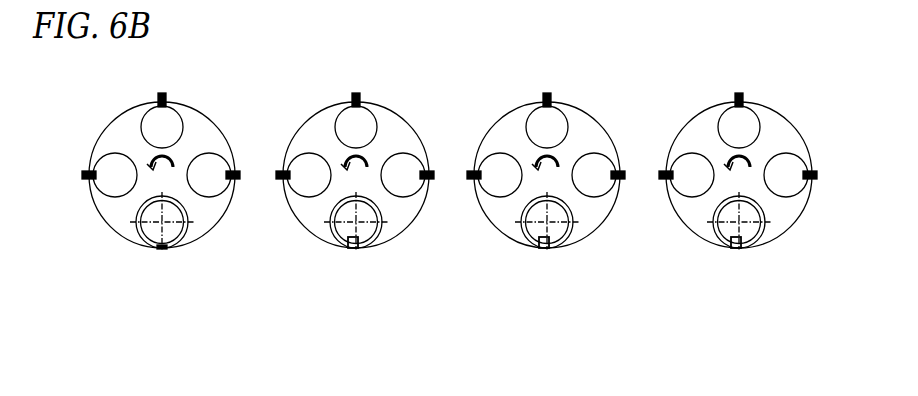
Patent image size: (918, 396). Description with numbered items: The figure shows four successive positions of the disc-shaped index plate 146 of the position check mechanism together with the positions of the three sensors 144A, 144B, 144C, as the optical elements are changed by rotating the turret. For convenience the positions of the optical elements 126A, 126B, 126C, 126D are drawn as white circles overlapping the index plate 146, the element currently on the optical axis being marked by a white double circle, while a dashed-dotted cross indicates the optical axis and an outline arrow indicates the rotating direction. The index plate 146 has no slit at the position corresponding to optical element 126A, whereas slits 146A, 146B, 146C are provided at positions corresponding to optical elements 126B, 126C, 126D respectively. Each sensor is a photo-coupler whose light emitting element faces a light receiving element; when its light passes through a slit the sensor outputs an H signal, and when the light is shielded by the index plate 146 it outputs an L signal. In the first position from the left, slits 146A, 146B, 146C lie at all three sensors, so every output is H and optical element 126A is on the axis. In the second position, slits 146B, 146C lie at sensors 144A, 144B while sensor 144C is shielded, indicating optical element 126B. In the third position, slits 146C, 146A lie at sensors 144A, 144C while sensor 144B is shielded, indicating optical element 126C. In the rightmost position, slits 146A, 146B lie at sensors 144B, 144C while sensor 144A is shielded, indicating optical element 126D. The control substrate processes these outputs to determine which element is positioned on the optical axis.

The optical element 126A is at (157, 235).
The optical element 126B is at (110, 172).
The optical element 126C is at (150, 127).
The optical element 126D is at (202, 180).
The sensor 144A is at (89, 179).
The sensor 144B is at (162, 93).
The sensor 144C is at (233, 171).
The index plate 146 is at (180, 190).
The slit 146A is at (93, 177).
The slit 146B is at (166, 100).
The slit 146C is at (232, 180).